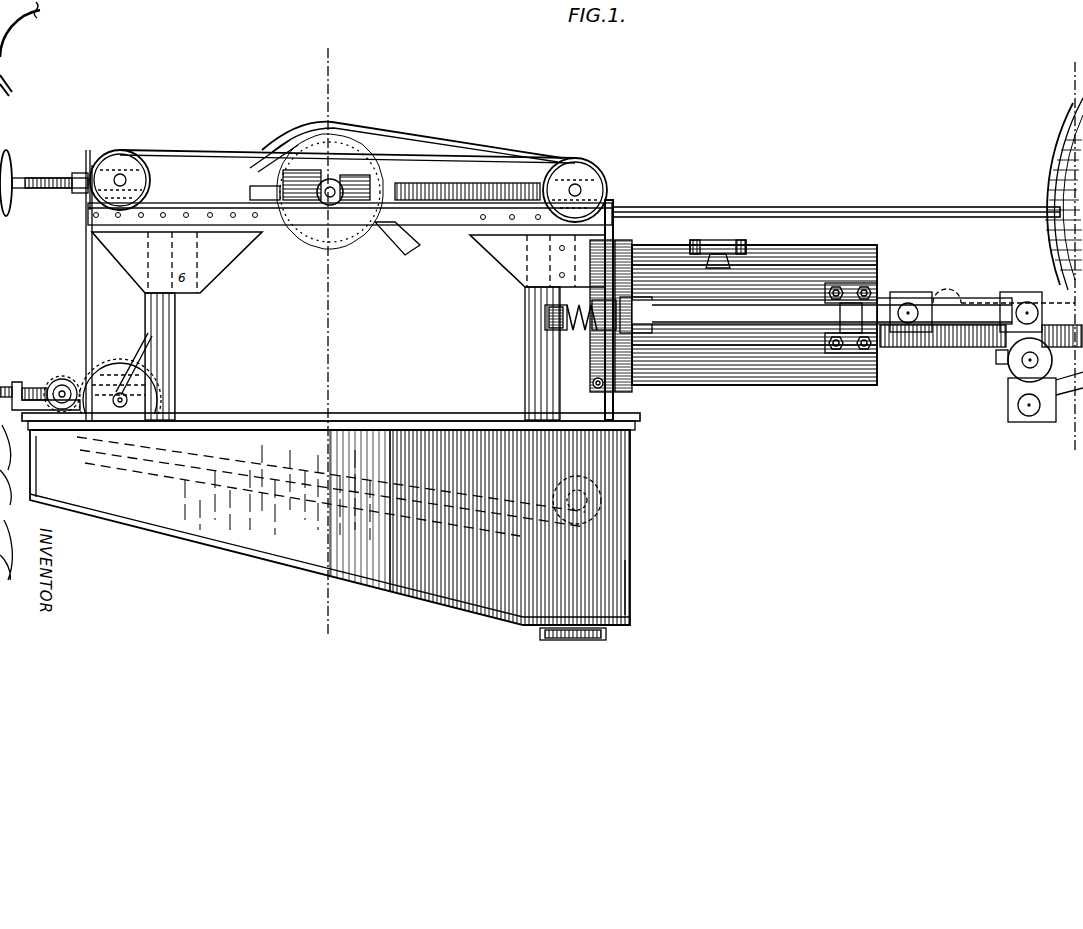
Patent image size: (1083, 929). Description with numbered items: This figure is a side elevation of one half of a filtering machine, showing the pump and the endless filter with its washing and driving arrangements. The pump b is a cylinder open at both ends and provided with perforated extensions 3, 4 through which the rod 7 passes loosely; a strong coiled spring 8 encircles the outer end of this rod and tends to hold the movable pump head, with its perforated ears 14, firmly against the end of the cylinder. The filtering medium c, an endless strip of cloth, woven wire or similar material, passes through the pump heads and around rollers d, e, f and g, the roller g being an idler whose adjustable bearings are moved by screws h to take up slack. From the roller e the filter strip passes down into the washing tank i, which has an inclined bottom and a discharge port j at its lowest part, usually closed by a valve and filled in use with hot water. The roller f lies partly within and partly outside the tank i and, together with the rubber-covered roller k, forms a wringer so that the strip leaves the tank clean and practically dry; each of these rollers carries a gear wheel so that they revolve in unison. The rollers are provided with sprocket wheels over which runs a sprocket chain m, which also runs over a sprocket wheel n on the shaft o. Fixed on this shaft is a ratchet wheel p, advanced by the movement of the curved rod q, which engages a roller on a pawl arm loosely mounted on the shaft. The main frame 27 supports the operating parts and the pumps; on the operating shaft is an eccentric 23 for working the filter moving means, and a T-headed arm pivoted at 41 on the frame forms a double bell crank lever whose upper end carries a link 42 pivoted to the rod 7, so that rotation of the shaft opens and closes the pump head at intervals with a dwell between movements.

The perforated extension 4 is at (652, 298).
The filtering medium c is at (88, 280).
The idler roller g is at (112, 168).
The roller d is at (592, 175).
The ratchet wheel p is at (362, 134).
The sprocket wheel n is at (316, 252).
The shaft o is at (318, 204).
The screws h is at (38, 195).
The wringer roller k is at (60, 380).
The sprocket chain m is at (150, 338).
The roller e is at (628, 500).
The roller f is at (331, 486).
The washing tank i is at (622, 550).
The discharge port j is at (600, 640).
The coiled springs 8 is at (552, 332).
The perforated ears 14 is at (588, 345).
The pump b is at (754, 312).
The rod 7 is at (697, 306).
The rod q is at (742, 214).
The perforated extension 3 is at (848, 312).
The main frame 27 is at (925, 282).
The link 42 is at (972, 312).
The pivot 41 is at (1028, 366).
The eccentric 23 is at (1066, 125).